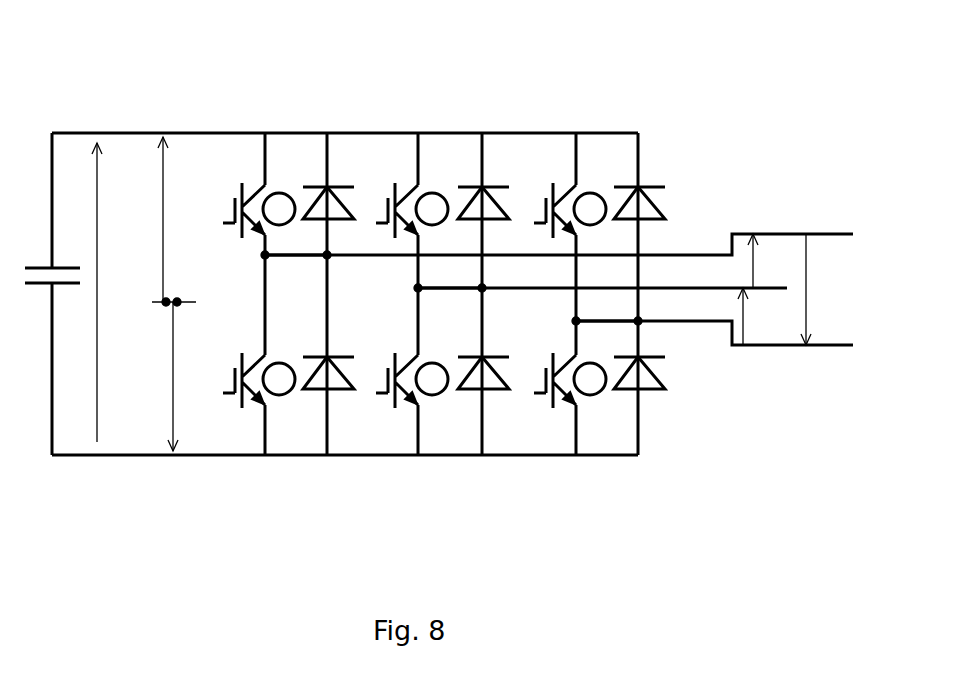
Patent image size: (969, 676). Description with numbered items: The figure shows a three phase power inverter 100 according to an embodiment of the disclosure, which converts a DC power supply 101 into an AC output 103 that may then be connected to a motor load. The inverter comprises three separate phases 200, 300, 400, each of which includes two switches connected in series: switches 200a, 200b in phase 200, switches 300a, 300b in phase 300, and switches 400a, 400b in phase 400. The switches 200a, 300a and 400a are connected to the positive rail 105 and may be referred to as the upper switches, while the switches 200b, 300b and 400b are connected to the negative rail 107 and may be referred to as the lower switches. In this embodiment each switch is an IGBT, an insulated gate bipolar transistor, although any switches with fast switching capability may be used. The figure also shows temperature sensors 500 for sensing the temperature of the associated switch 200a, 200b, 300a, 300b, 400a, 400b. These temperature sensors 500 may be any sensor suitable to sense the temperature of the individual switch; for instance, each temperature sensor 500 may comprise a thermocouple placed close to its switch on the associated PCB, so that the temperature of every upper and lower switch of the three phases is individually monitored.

The three phase power inverter 100 is at (163, 107).
The DC power supply 101 is at (37, 303).
The AC output 103 is at (780, 365).
The positive rail 105 is at (134, 133).
The negative rail 107 is at (93, 455).
The phase 200 is at (267, 483).
The switch 200a is at (250, 166).
The switch 200b is at (243, 428).
The phase 300 is at (421, 485).
The switch 300a is at (405, 166).
The switch 300b is at (405, 424).
The phase 400 is at (579, 485).
The switch 400a is at (562, 166).
The switch 400b is at (562, 424).
The temperature sensor 500 is at (281, 193).